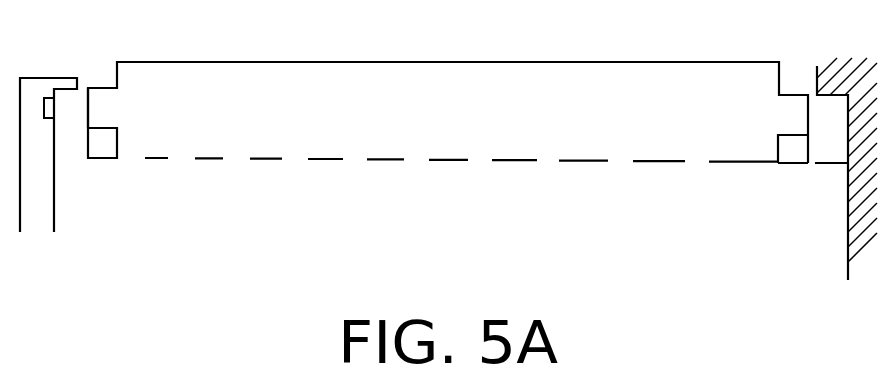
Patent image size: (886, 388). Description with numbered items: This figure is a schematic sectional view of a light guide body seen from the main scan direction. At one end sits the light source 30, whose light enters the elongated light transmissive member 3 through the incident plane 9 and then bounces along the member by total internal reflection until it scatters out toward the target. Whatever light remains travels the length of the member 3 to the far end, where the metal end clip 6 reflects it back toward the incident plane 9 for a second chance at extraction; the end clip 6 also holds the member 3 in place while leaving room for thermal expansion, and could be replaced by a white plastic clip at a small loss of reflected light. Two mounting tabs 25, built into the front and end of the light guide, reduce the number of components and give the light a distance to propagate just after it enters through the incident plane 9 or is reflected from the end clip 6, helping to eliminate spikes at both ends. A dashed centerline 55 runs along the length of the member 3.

The light transmissive member 3 is at (613, 62).
The metal end clip 6 is at (848, 148).
The incident plane 9 is at (88, 118).
The mounting tabs 25 is at (105, 151).
The light source 30 is at (47, 98).
The center axis line 55 is at (210, 158).